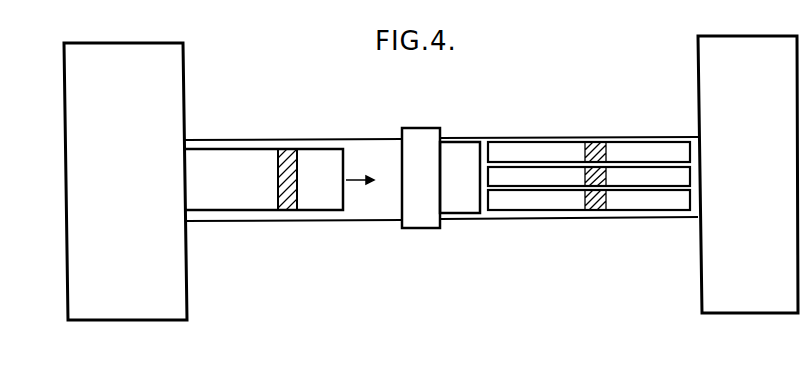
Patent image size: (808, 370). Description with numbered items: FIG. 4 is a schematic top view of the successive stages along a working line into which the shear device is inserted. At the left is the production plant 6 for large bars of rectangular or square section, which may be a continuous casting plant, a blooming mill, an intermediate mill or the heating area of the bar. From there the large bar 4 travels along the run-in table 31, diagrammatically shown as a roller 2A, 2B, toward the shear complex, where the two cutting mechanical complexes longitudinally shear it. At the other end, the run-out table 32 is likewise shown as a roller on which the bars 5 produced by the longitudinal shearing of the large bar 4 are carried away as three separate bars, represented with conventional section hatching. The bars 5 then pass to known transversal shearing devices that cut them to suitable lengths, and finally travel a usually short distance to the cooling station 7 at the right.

The production plant 6 is at (170, 242).
The cooling station 7 is at (737, 173).
The run-in table 31 is at (384, 178).
The large bar 4 is at (260, 183).
The roller 2A is at (422, 215).
The roller 2B is at (473, 205).
The run-out table 32 is at (527, 212).
The bars 5 is at (630, 152).